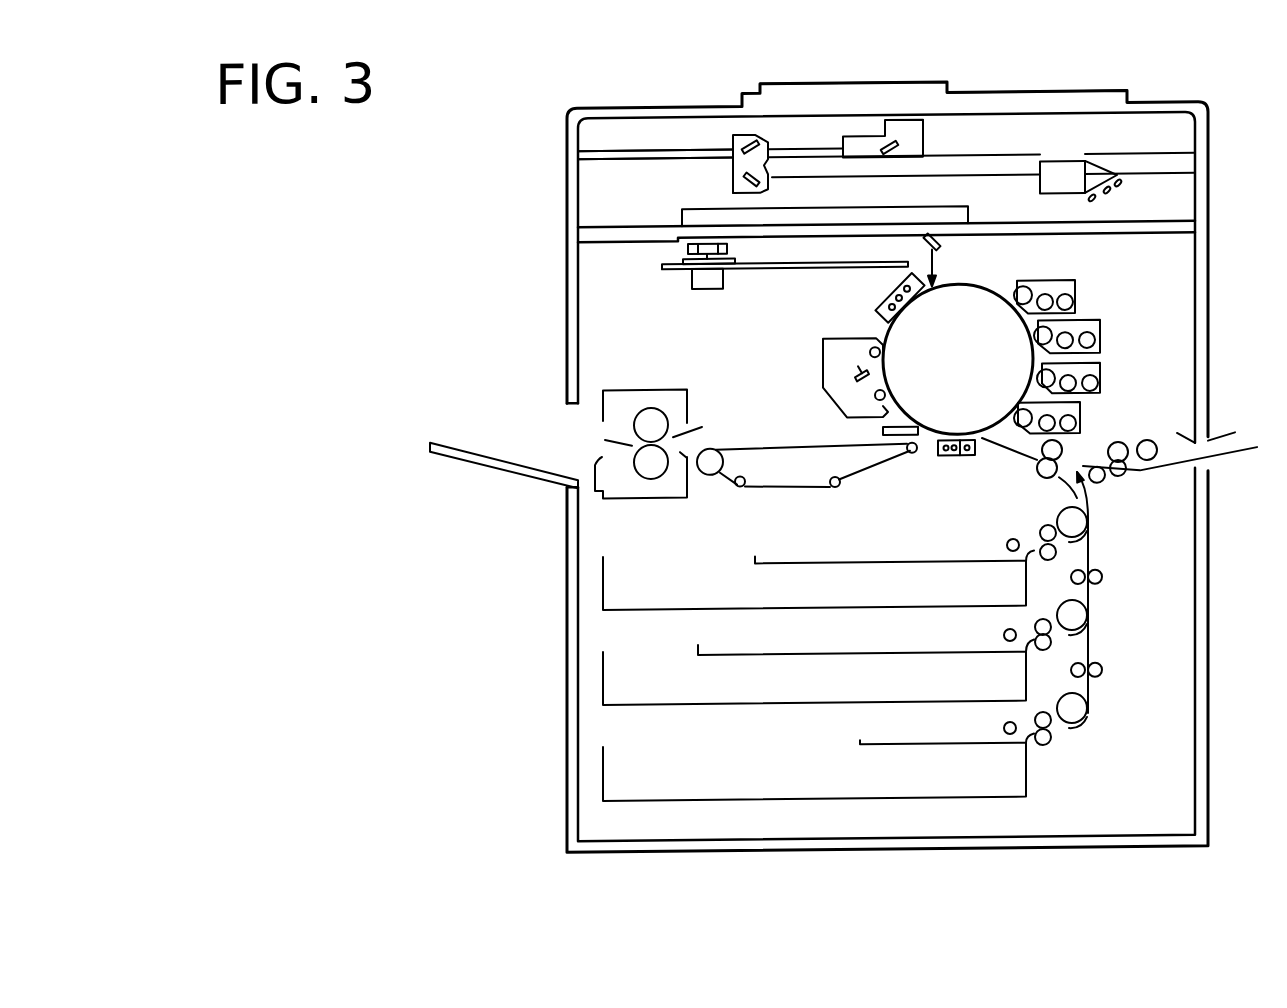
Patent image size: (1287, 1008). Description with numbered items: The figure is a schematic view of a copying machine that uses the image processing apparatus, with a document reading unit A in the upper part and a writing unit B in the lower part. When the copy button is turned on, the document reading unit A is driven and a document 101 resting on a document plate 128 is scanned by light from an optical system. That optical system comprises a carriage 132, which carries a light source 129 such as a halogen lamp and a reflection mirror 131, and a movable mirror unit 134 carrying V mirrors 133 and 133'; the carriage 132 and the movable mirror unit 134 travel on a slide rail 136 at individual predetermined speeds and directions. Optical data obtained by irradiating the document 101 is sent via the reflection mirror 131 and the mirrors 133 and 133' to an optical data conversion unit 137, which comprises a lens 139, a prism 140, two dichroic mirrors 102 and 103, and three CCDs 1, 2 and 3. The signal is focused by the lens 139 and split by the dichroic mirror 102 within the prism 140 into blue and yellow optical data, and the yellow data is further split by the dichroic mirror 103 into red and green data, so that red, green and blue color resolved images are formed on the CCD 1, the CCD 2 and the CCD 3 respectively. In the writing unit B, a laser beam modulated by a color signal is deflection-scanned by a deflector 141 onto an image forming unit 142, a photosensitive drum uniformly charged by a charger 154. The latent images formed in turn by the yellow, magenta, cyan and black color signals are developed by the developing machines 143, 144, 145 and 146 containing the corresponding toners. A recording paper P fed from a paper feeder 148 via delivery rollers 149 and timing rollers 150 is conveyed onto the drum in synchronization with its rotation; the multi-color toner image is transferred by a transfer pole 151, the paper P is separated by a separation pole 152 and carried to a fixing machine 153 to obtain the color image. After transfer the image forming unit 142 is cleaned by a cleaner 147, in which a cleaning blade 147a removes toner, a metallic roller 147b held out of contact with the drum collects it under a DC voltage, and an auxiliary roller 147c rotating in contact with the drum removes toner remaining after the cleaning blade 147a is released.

The document reading unit A is at (616, 129).
The writing unit B is at (603, 279).
The document 101 is at (816, 81).
The dichroic mirror 102 is at (1090, 162).
The dichroic mirror 103 is at (1110, 166).
The document plate 128 is at (1058, 92).
The light source 129 is at (902, 135).
The reflection mirror 131 is at (928, 155).
The carriage 132 is at (925, 137).
The V mirror 133 is at (701, 154).
The V mirror 133' is at (697, 187).
The movable mirror unit 134 is at (566, 150).
The slide rail 136 is at (600, 158).
The optical data conversion unit 137 is at (1085, 199).
The lens 139 is at (1065, 162).
The prism 140 is at (1097, 168).
The CCD 1 is at (1113, 194).
The CCD 2 is at (1123, 185).
The CCD 3 is at (1097, 202).
The deflector 141 is at (662, 260).
The image forming unit 142 is at (976, 284).
The developing machine 143 is at (1078, 297).
The developing machine 144 is at (1102, 339).
The developing machine 145 is at (1102, 381).
The developing machine 146 is at (1082, 421).
The cleaner 147 is at (823, 342).
The cleaning blade 147a is at (858, 374).
The metallic roller 147b is at (823, 380).
The auxiliary roller 147c is at (873, 350).
The paper feeder 148 is at (546, 546).
The delivery rollers 149 is at (1110, 515).
The timing rollers 150 is at (1040, 477).
The transfer pole 151 is at (965, 457).
The separation pole 152 is at (945, 457).
The fixing machine 153 is at (623, 497).
The charger 154 is at (880, 289).
The recording paper P is at (1075, 732).